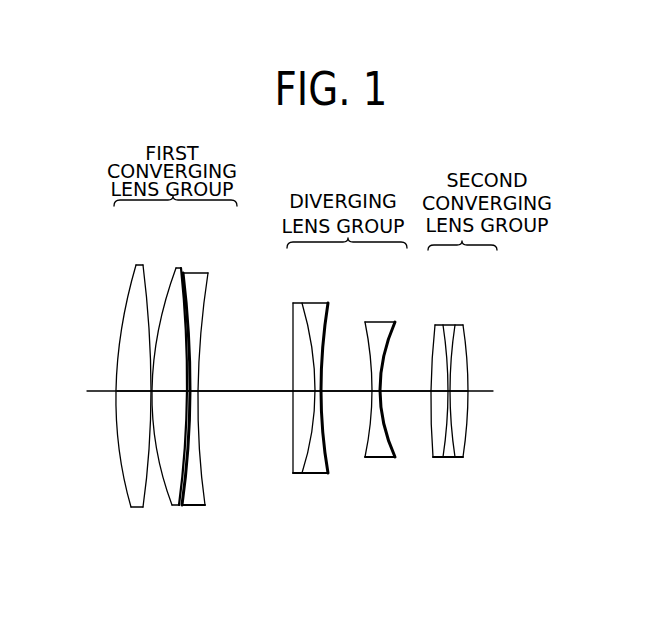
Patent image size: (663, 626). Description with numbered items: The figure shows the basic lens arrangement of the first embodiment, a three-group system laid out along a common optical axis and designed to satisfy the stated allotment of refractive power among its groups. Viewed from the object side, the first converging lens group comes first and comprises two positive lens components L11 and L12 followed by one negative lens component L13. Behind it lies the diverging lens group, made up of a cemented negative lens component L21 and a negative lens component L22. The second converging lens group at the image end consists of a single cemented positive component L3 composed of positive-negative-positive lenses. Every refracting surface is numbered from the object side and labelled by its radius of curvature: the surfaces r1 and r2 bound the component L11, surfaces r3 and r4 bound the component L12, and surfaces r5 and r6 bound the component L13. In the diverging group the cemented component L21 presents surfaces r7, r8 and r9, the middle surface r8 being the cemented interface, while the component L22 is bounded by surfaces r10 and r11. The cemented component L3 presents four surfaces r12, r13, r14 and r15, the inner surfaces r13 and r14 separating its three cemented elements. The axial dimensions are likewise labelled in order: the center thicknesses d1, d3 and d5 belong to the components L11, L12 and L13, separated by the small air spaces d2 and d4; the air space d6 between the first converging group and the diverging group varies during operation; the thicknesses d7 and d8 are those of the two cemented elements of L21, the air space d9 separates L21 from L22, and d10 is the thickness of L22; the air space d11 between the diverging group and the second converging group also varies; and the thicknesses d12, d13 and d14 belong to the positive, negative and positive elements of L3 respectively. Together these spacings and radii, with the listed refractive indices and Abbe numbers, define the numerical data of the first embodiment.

The positive lens component L11 is at (139, 265).
The positive lens component L12 is at (179, 268).
The negative lens component L13 is at (200, 273).
The cemented negative lens component L21 is at (310, 303).
The negative lens component L22 is at (383, 322).
The cemented positive component L3 is at (452, 325).
The radius of curvature r1 is at (129, 508).
The radius of curvature r2 is at (143, 508).
The radius of curvature r3 is at (172, 505).
The radius of curvature r4 is at (180, 506).
The radius of curvature r5 is at (187, 506).
The radius of curvature r6 is at (206, 506).
The radius of curvature r7 is at (293, 474).
The radius of curvature r8 is at (303, 474).
The radius of curvature r9 is at (328, 474).
The radius of curvature r10 is at (366, 458).
The radius of curvature r11 is at (395, 458).
The radius of curvature r12 is at (434, 458).
The radius of curvature r13 is at (443, 458).
The radius of curvature r14 is at (456, 458).
The radius of curvature r15 is at (464, 458).
The center thickness d1 is at (136, 391).
The air space d2 is at (149, 391).
The center thickness d3 is at (174, 391).
The air space d4 is at (187, 391).
The center thickness d5 is at (194, 391).
The air space d6 is at (263, 391).
The center thickness d7 is at (298, 391).
The center thickness d8 is at (317, 392).
The air space d9 is at (334, 384).
The center thickness d10 is at (375, 391).
The air space d11 is at (396, 384).
The center thickness d12 is at (441, 391).
The center thickness d13 is at (452, 391).
The center thickness d14 is at (456, 392).